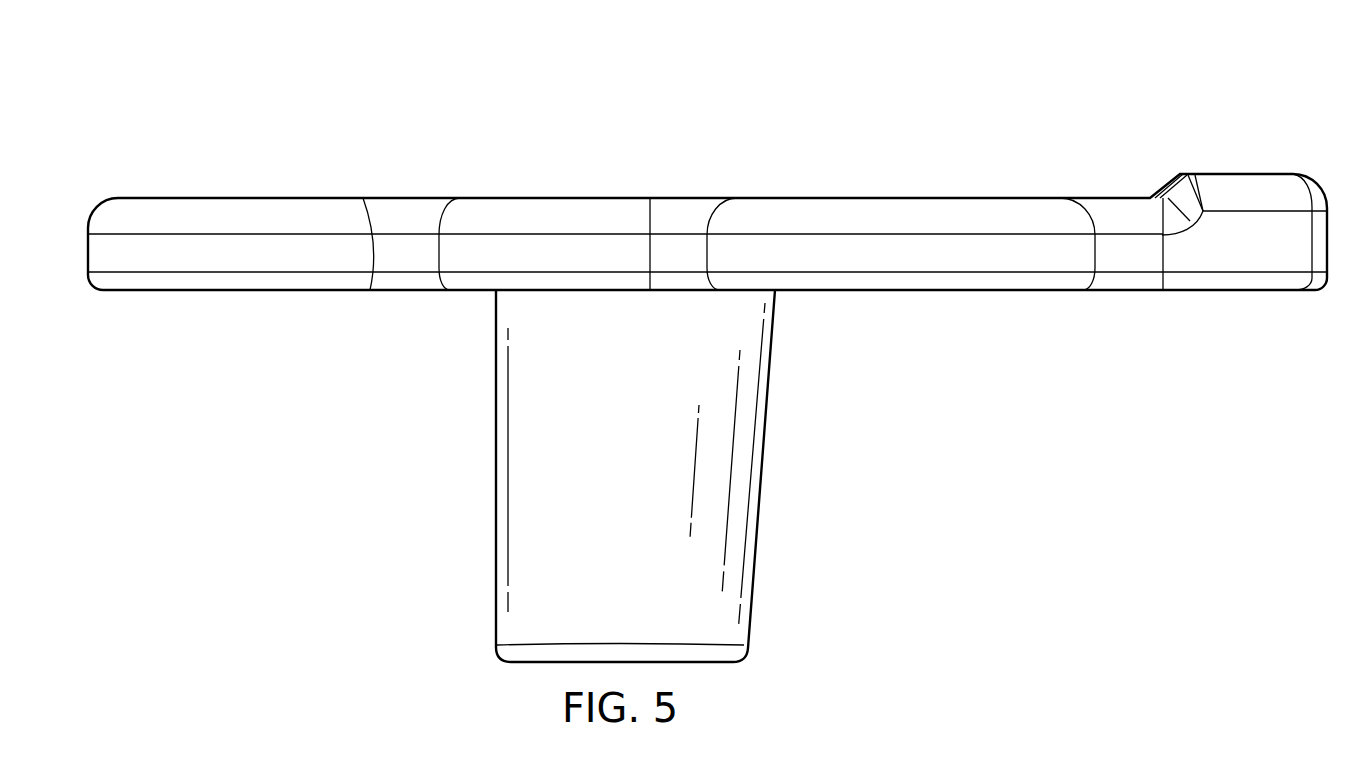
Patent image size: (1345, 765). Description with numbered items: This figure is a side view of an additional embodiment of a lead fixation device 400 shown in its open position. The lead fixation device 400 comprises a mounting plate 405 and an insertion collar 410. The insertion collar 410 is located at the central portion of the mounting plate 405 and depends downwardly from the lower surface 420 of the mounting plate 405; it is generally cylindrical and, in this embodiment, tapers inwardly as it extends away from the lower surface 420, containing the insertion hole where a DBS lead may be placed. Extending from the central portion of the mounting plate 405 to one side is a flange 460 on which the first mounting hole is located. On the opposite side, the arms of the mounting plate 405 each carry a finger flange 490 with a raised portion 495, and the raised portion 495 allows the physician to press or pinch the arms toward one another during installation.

The lead fixation device 400 is at (567, 82).
The mounting plate 405 is at (88, 255).
The flange 460 is at (228, 254).
The lower surface 420 is at (815, 292).
The insertion collar 410 is at (758, 472).
The finger flange 490 is at (1238, 253).
The raised portion 495 is at (1247, 173).